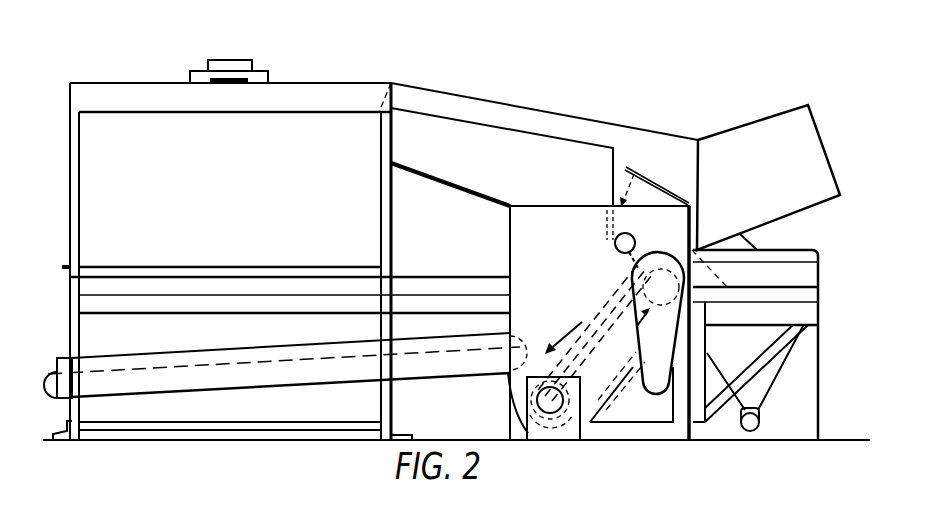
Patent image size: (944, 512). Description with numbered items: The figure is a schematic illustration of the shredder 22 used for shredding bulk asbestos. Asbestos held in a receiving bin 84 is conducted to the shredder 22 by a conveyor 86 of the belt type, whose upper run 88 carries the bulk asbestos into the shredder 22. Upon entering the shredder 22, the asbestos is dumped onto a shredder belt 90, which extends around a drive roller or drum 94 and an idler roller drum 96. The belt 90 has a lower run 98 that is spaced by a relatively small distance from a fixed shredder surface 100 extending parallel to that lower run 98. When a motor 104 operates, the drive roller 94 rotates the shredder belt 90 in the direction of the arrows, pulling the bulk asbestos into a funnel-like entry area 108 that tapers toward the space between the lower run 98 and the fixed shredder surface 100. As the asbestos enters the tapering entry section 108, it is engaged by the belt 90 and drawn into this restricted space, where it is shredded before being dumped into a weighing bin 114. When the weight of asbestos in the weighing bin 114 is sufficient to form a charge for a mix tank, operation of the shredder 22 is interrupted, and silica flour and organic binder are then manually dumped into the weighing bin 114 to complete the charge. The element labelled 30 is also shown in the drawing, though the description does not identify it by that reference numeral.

The shredder 22 is at (666, 117).
The receiving bin 84 is at (224, 203).
The upper run 88 is at (258, 355).
The conveyor 86 is at (430, 360).
The funnel-like entry area 108 is at (533, 374).
The motor 104 is at (572, 432).
The drive roller 94 is at (520, 442).
The shredder belt 90 is at (577, 318).
The idler roller drum 96 is at (663, 251).
The fixed shredder surface 100 is at (629, 385).
The lower run 98 is at (597, 420).
The weighing bin 114 is at (742, 354).
The drive pulley 30 is at (752, 431).